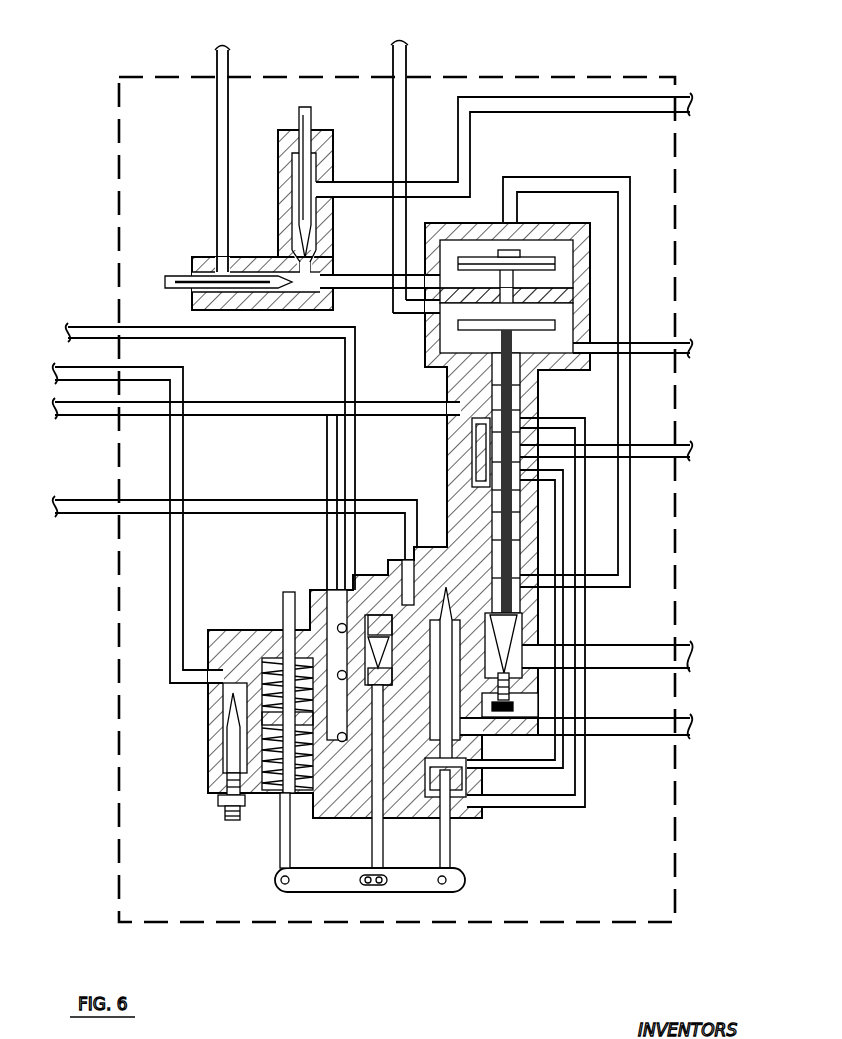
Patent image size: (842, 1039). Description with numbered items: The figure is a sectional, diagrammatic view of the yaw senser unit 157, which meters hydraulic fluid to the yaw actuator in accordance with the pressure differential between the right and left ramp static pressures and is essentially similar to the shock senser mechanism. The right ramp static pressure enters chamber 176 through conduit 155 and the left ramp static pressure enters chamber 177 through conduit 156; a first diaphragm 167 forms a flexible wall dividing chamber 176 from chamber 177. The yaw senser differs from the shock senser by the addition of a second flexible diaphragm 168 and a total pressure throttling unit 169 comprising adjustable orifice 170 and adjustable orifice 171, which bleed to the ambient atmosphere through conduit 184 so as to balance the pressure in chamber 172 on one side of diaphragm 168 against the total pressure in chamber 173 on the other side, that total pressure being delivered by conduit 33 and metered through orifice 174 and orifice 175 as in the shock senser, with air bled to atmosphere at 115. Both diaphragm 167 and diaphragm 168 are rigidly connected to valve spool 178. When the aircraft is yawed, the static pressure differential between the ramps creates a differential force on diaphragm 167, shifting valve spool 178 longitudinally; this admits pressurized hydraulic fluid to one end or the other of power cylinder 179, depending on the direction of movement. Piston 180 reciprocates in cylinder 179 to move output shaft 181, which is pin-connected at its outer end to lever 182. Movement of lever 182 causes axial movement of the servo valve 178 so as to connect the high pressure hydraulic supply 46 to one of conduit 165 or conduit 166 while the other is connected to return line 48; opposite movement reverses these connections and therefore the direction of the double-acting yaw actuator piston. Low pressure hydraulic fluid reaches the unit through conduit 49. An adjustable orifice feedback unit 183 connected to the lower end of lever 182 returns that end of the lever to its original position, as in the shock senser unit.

The yaw senser unit 157 is at (571, 59).
The conduit 184 is at (222, 80).
The conduit 156 is at (398, 66).
The conduit 33 is at (687, 113).
The total pressure throttling unit 169 is at (325, 168).
The adjustable orifice 170 is at (318, 262).
The adjustable orifice 171 is at (300, 284).
The chamber 173 is at (480, 240).
The second flexible diaphragm 168 is at (560, 262).
The chamber 172 is at (568, 285).
The chamber 177 is at (568, 322).
The hydraulic conduit 165 is at (92, 325).
The hydraulic conduit 166 is at (72, 368).
The conduit 155 is at (684, 348).
The first diaphragm 167 is at (445, 328).
The chamber 176 is at (470, 345).
The valve spool 178 is at (538, 388).
The conduit 49 is at (684, 445).
The hydraulic return line 48 is at (73, 407).
The high pressure conduit line 46 is at (72, 502).
The orifice 174 is at (487, 575).
The orifice 175 is at (450, 620).
The atmosphere bleed 115 is at (683, 733).
The adjustable orifice feedback unit 183 is at (278, 810).
The piston 180 is at (425, 790).
The power cylinder 179 is at (457, 795).
The output shaft 181 is at (447, 860).
The lever 182 is at (400, 888).